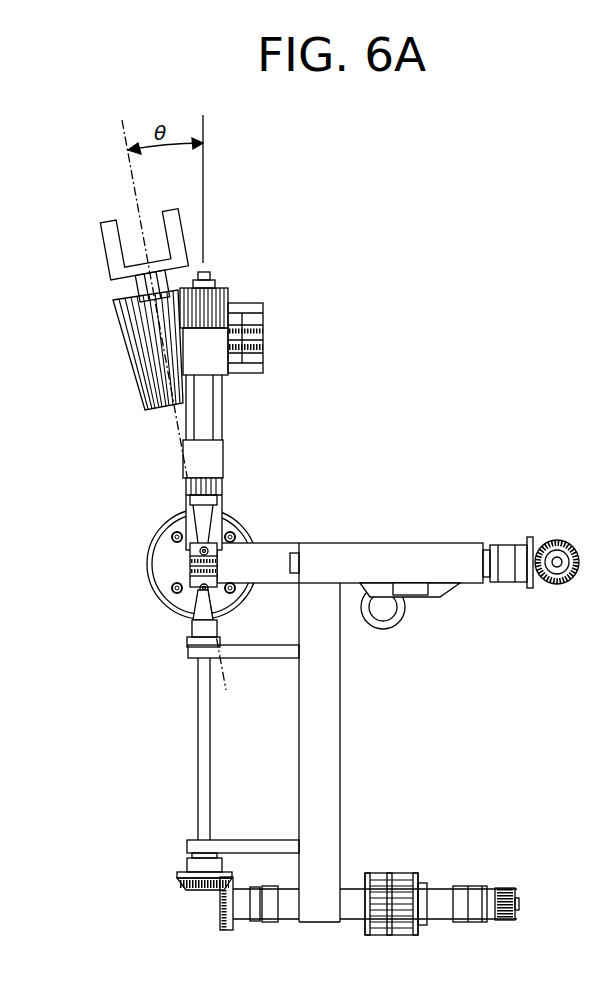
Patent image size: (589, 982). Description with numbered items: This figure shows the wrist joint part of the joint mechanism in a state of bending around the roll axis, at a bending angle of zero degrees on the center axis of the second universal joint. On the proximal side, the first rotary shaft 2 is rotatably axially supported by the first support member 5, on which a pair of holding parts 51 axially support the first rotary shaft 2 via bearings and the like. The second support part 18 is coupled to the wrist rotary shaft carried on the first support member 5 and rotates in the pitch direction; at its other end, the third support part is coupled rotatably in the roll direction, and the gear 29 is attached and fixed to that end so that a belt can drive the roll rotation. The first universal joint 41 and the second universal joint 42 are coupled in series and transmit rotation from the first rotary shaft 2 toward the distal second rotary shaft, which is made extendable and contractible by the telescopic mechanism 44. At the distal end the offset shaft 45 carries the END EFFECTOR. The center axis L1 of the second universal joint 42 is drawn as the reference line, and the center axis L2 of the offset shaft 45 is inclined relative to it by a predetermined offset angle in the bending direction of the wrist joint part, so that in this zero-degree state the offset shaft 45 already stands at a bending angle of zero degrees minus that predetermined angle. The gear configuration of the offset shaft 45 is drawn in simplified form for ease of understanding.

The first rotary shaft 2 is at (198, 753).
The first support member 5 is at (340, 744).
The second support part 18 is at (276, 553).
The gear 29 is at (168, 575).
The first universal joint 41 is at (194, 590).
The second universal joint 42 is at (188, 536).
The telescopic mechanism 44 is at (216, 467).
The offset shaft 45 is at (130, 297).
The holding parts 51 is at (264, 655).
The center axis of the second universal joint L1 is at (206, 126).
The center axis of the offset shaft L2 is at (124, 148).
The end effector END EFFECTOR is at (170, 225).